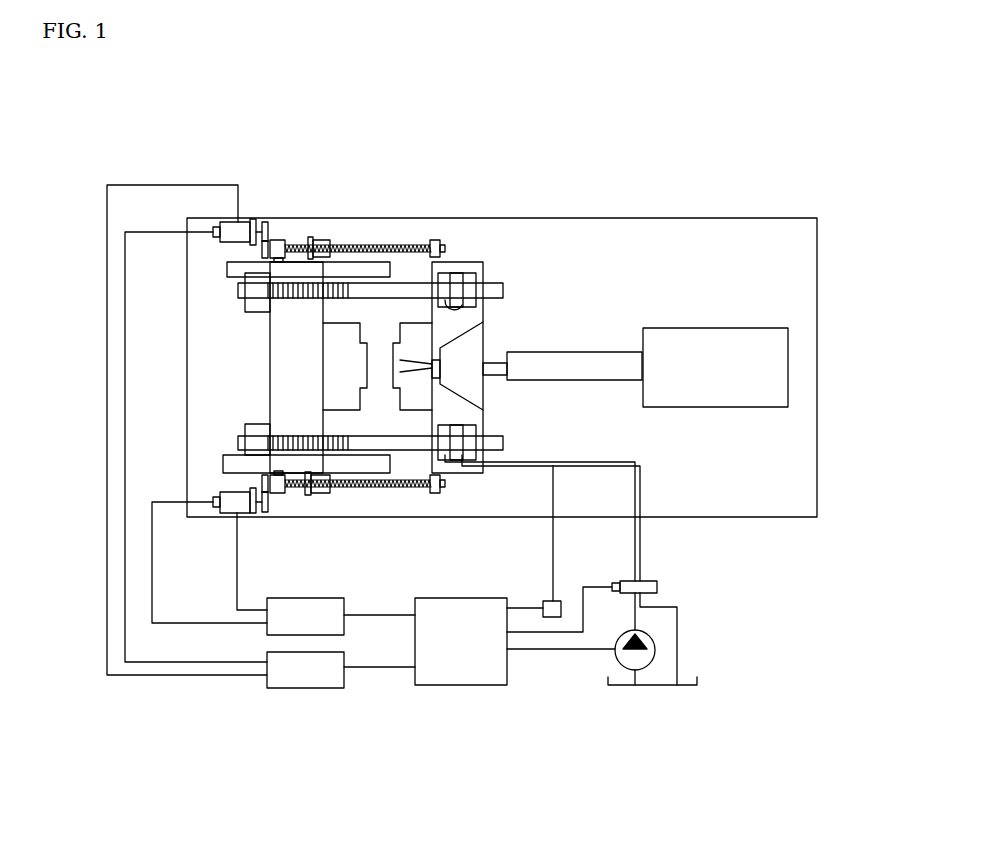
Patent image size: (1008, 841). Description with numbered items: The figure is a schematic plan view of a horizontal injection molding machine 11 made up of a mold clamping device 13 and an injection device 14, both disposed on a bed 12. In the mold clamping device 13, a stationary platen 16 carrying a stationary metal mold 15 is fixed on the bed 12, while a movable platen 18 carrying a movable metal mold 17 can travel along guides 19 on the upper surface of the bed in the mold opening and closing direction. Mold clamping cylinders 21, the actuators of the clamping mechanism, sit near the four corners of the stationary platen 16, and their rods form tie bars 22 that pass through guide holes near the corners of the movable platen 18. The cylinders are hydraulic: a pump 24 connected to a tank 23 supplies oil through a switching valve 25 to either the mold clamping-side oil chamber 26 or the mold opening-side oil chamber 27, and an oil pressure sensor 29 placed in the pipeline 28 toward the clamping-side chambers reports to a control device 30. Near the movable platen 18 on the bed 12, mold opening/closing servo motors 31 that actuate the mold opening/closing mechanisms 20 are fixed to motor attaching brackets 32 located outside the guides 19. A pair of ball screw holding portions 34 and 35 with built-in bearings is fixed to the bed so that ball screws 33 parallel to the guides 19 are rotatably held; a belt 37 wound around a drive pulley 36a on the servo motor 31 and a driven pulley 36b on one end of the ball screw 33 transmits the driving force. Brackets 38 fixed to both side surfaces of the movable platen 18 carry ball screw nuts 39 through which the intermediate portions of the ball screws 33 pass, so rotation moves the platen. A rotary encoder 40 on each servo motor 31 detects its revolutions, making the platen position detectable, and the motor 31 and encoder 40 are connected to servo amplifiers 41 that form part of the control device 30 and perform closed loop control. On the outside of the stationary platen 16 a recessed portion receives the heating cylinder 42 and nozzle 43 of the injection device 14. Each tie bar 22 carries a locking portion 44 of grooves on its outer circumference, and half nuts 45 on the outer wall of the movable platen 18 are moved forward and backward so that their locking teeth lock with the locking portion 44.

The injection molding machine 11 is at (598, 170).
The bed 12 is at (800, 290).
The mold clamping device 13 is at (410, 172).
The injection device 14 is at (697, 326).
The stationary metal mold 15 is at (410, 392).
The stationary platen 16 is at (483, 262).
The movable metal mold 17 is at (346, 392).
The movable platen 18 is at (270, 404).
The guides 19 is at (378, 466).
The mold opening/closing mechanism 20 is at (374, 240).
The mold clamping cylinder 21 is at (463, 288).
The tie bar 22 is at (452, 462).
The tank 23 is at (683, 672).
The pump 24 is at (616, 660).
The switching valve 25 is at (657, 587).
The mold clamping-side oil chamber 26 is at (445, 310).
The mold opening-side oil chamber 27 is at (450, 305).
The pipeline 28 is at (607, 470).
The oil pressure sensor 29 is at (556, 600).
The control device 30 is at (440, 676).
The mold opening/closing servo motor 31 is at (236, 230).
The motor attaching bracket 32 is at (253, 219).
The ball screw 33 is at (400, 245).
The ball screw holding portion 34 is at (280, 240).
The ball screw holding portion 35 is at (437, 240).
The drive pulley 36a is at (265, 222).
The driven pulley 36b is at (262, 250).
The belt 37 is at (267, 240).
The bracket 38 is at (311, 238).
The ball screw nut 39 is at (322, 240).
The rotary encoder 40 is at (214, 232).
The servo amplifier 41 is at (281, 629).
The heating cylinder 42 is at (606, 378).
The nozzle 43 is at (495, 374).
The locking portion 44 is at (252, 290).
The half nut 45 is at (255, 305).